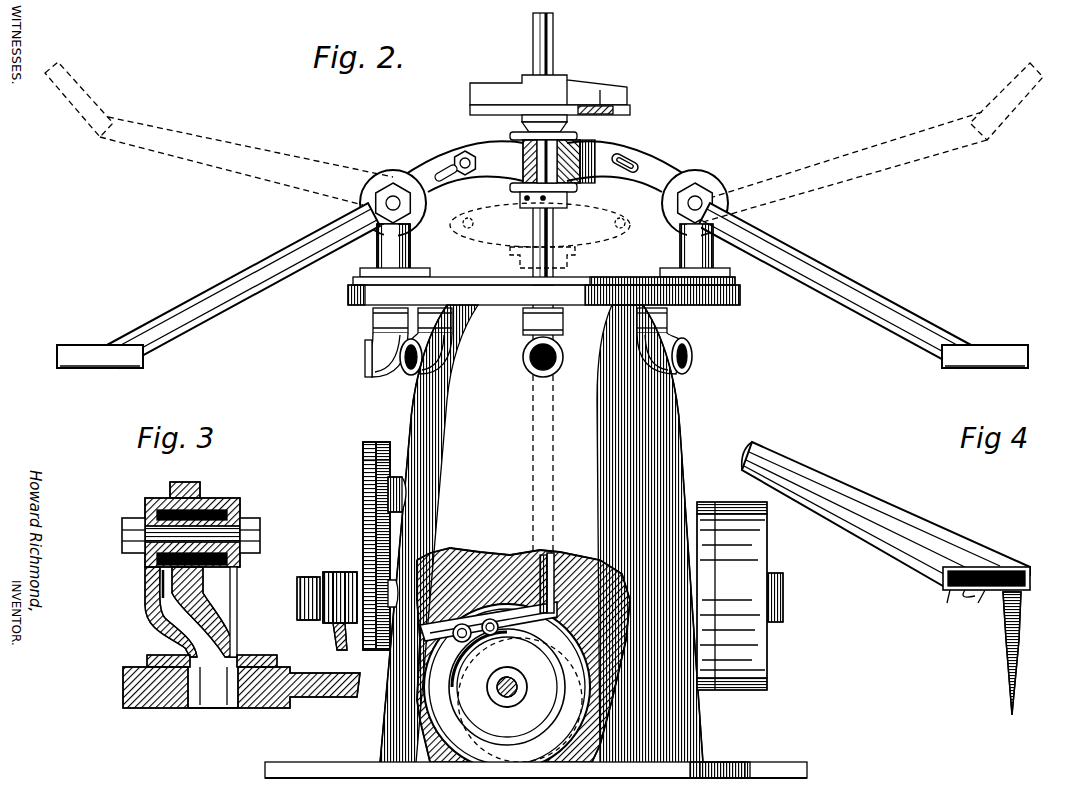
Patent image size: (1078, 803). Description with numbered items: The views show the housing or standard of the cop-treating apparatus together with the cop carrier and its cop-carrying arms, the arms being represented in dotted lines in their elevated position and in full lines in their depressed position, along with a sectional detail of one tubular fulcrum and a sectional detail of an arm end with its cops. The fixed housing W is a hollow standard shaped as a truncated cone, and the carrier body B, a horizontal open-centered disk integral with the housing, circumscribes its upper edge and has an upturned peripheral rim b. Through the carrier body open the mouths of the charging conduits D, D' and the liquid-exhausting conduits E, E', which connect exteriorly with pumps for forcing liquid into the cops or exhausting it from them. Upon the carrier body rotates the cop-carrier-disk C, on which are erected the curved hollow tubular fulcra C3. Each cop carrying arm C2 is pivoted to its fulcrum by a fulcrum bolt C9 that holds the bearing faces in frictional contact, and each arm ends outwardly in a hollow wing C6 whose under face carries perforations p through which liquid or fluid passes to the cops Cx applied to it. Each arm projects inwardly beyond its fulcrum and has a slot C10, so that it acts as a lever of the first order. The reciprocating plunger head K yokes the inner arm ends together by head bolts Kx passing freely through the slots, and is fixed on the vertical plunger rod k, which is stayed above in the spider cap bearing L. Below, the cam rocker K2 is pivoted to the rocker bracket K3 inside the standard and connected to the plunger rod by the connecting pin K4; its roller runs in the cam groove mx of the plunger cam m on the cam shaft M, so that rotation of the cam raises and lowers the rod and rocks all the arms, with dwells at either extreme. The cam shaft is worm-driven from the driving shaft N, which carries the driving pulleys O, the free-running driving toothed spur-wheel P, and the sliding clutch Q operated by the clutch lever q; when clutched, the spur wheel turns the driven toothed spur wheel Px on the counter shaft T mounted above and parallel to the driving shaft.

In FIG. 2, the plunger rod k is at (536, 33).
In FIG. 2, the spider cap bearing L is at (612, 95).
In FIG. 2, the reciprocating plunger head K is at (625, 150).
In FIG. 2, the head bolts Kx is at (465, 152).
In FIG. 2, the slot C10 is at (650, 160).
In FIG. 2, the fulcrum bolt C9 is at (722, 198).
In FIG. 3, the fulcrum bolt C9 is at (124, 536).
In FIG. 2, the cop carrying arms C2 is at (878, 272).
In FIG. 3, the cop carrying arms C2 is at (238, 500).
In FIG. 4, the cop carrying arms C2 is at (856, 512).
In FIG. 2, the wing C6 is at (1003, 362).
In FIG. 4, the wing C6 is at (1032, 582).
In FIG. 2, the tubular fulcra C3 is at (690, 248).
In FIG. 3, the tubular fulcra C3 is at (150, 612).
In FIG. 2, the cop-carrier-disk C is at (356, 283).
In FIG. 3, the cop-carrier-disk C is at (128, 690).
In FIG. 2, the upturned peripheral rim b is at (733, 290).
In FIG. 2, the carrier body B is at (348, 300).
In FIG. 2, the liquid-exhausting conduit E' is at (369, 342).
In FIG. 2, the charging conduit D' is at (417, 355).
In FIG. 2, the liquid-exhausting conduit E is at (530, 351).
In FIG. 2, the charging conduit D is at (678, 341).
In FIG. 2, the fixed housing W is at (541, 534).
In FIG. 2, the driving pulleys O is at (732, 596).
In FIG. 2, the driving shaft N is at (784, 598).
In FIG. 2, the sliding clutch Q is at (338, 572).
In FIG. 2, the clutch lever q is at (336, 645).
In FIG. 2, the driving toothed spur-wheel P is at (378, 650).
In FIG. 2, the driven toothed spur wheel Px is at (362, 450).
In FIG. 2, the counter shaft T is at (397, 477).
In FIG. 2, the cam shaft M is at (523, 659).
In FIG. 2, the plunger cam m is at (507, 687).
In FIG. 2, the cam groove mx is at (505, 698).
In FIG. 2, the rocker bracket K3 is at (488, 621).
In FIG. 2, the connecting pin K4 is at (540, 618).
In FIG. 2, the cam rocker K2 is at (558, 566).
In FIG. 4, the cops Cx is at (1021, 622).
In FIG. 4, the perforations p is at (955, 596).